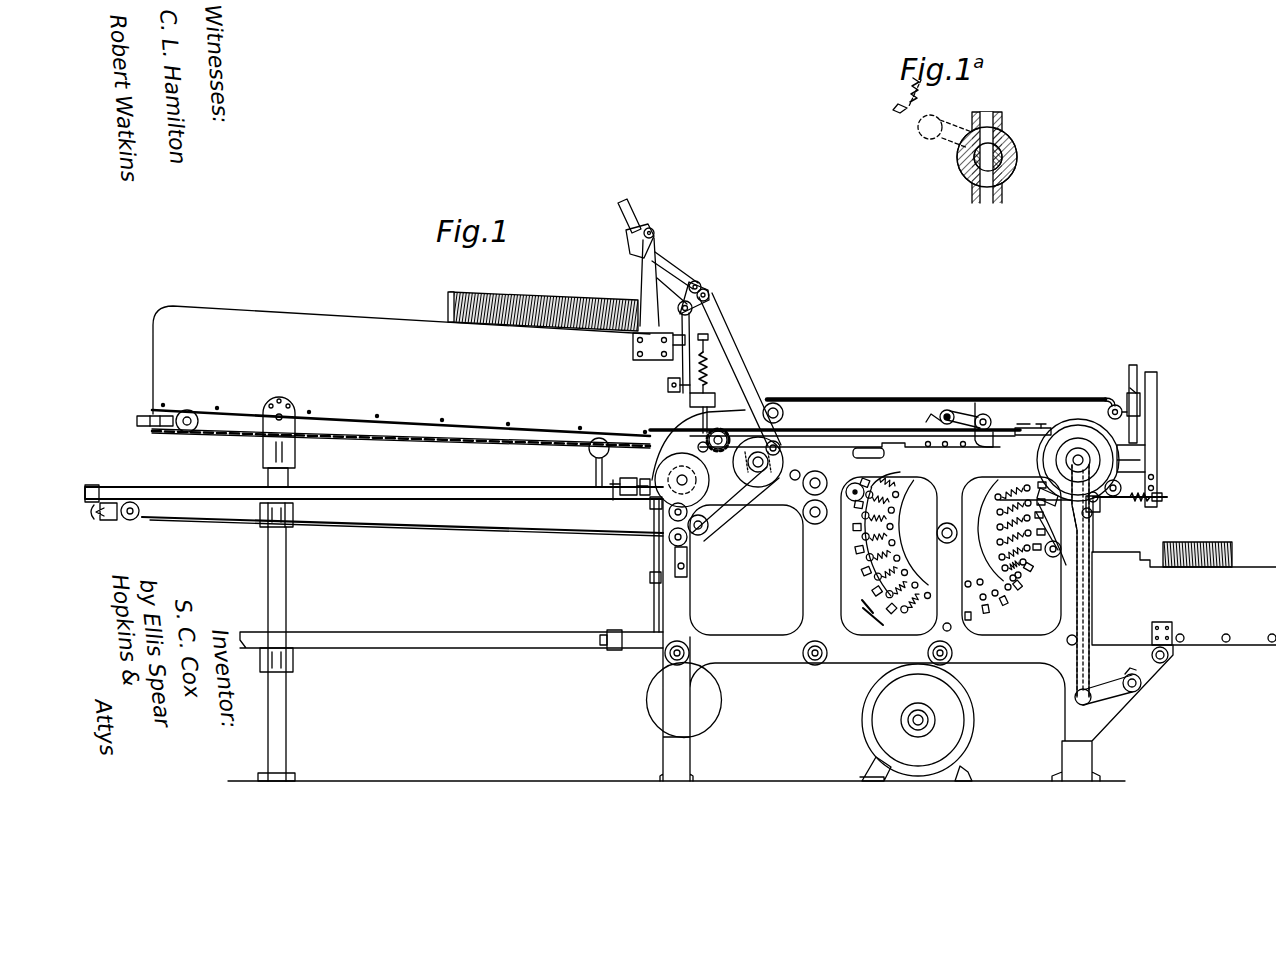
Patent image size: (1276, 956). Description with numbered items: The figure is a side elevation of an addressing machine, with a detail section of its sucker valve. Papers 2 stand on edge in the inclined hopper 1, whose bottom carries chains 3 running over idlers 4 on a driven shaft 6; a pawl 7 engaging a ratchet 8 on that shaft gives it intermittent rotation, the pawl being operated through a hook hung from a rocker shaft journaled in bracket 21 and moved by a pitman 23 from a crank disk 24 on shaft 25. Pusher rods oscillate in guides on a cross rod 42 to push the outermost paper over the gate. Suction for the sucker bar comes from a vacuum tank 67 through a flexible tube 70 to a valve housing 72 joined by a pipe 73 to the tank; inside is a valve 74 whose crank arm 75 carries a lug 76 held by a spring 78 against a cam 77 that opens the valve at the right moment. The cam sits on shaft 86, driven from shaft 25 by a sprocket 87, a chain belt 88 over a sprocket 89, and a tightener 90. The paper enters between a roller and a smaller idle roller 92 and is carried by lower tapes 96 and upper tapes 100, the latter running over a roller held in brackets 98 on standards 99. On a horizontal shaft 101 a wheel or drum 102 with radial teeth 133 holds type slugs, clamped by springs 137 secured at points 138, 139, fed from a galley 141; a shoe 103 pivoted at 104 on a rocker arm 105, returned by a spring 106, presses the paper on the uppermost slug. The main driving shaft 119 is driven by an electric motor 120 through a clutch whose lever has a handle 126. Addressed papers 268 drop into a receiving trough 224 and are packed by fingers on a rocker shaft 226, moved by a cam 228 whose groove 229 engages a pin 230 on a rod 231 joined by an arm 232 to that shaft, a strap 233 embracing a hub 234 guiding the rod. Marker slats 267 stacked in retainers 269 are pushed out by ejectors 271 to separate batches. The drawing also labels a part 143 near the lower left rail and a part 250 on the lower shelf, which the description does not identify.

In FIG. 1, the hopper 1 is at (233, 334).
In FIG. 1, the papers 2 is at (522, 306).
In FIG. 1, the chains 3 is at (398, 436).
In FIG. 1, the idlers 4 is at (180, 433).
In FIG. 1, the driven shaft 6 is at (728, 426).
In FIG. 1, the pawl 7 is at (720, 408).
In FIG. 1, the ratchet 8 is at (750, 428).
In FIG. 1, the bracket 21 is at (640, 334).
In FIG. 1, the pitman 23 is at (712, 320).
In FIG. 1, the crank disk 24 is at (784, 452).
In FIG. 1, the shaft 25 is at (830, 475).
In FIG. 1, the cross rod 42 is at (452, 528).
In FIG. 1, the vacuum tank 67 is at (722, 706).
In FIG. 1, the flexible tube 70 is at (672, 421).
In FIG. 1, the valve housing 72 is at (656, 497).
In FIG. 1, the pipe 73 is at (652, 576).
In FIG. 1A, the pipe 73 is at (1000, 197).
In FIG. 1A, the valve 74 is at (970, 163).
In FIG. 1A, the crank arm 75 is at (940, 136).
In FIG. 1A, the lug 76 is at (925, 125).
In FIG. 1, the cam 77 is at (704, 550).
In FIG. 1, the spring 78 is at (670, 478).
In FIG. 1A, the spring 78 is at (905, 92).
In FIG. 1, the shaft 86 is at (655, 495).
In FIG. 1, the sprocket 87 is at (786, 464).
In FIG. 1, the chain belt 88 is at (735, 510).
In FIG. 1, the sprocket 89 is at (763, 528).
In FIG. 1, the tightener 90 is at (675, 538).
In FIG. 1, the idle roller 92 is at (782, 410).
In FIG. 1, the tapes 96 is at (912, 420).
In FIG. 1, the brackets 98 is at (1154, 382).
In FIG. 1, the standards 99 is at (1135, 365).
In FIG. 1, the tapes 100 is at (945, 410).
In FIG. 1, the horizontal shaft 101 is at (940, 539).
In FIG. 1, the wheel or drum 102 is at (1011, 550).
In FIG. 1, the shoe 103 is at (940, 411).
In FIG. 1, the pivot 104 is at (955, 408).
In FIG. 1, the rocker arm 105 is at (980, 413).
In FIG. 1, the spring 106 is at (952, 410).
In FIG. 1, the main driving shaft 119 is at (1105, 450).
In FIG. 1, the electric motor 120 is at (968, 736).
In FIG. 1, the handle 126 is at (868, 448).
In FIG. 1, the radial teeth 133 is at (856, 575).
In FIG. 1, the springs 137 is at (1025, 573).
In FIG. 1, the point 138 is at (890, 537).
In FIG. 1, the point 139 is at (988, 610).
In FIG. 1, the galley 141 is at (408, 498).
In FIG. 1, the roller 143 is at (136, 521).
In FIG. 1, the receiving trough 224 is at (1208, 637).
In FIG. 1, the rocker shaft 226 is at (1133, 692).
In FIG. 1, the cam 228 is at (1133, 462).
In FIG. 1, the groove 229 is at (1083, 434).
In FIG. 1, the lug or pin 230 is at (1157, 483).
In FIG. 1, the rod 231 is at (1082, 618).
In FIG. 1, the arm 232 is at (1103, 702).
In FIG. 1, the strap 233 is at (1080, 456).
In FIG. 1, the hub 234 is at (1075, 458).
In FIG. 1, the shelf 250 is at (525, 648).
In FIG. 1, the slats 267 is at (1163, 568).
In FIG. 1, the addressed papers 268 is at (1212, 566).
In FIG. 1, the retainers or guides 269 is at (1150, 398).
In FIG. 1, the ejectors 271 is at (1170, 497).